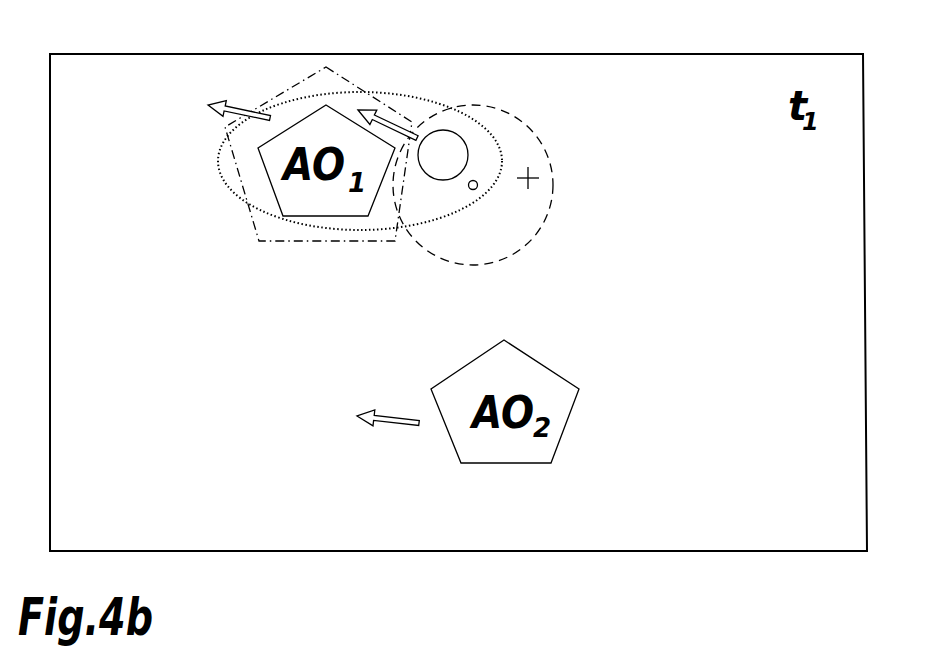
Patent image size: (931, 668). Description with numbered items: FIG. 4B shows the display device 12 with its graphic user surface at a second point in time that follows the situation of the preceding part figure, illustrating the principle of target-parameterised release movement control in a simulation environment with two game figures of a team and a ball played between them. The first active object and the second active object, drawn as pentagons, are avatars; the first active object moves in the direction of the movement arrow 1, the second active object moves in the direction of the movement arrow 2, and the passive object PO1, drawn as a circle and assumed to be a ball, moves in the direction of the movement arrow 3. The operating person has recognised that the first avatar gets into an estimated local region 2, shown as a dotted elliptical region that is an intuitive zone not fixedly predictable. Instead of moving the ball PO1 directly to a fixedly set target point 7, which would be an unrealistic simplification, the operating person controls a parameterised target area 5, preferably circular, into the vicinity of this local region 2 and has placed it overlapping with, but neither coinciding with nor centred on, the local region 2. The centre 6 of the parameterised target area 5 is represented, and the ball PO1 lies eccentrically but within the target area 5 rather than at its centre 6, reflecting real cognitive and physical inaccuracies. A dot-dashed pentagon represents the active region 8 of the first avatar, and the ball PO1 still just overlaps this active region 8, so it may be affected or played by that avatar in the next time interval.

The movement arrow 1 is at (232, 113).
The movement arrow / local region 2 is at (233, 190).
The movement arrow 3 is at (397, 130).
The parameterised target area 5 is at (542, 227).
The centre 6 is at (470, 189).
The target point 7 is at (540, 178).
The active region 8 is at (297, 242).
The display device 12 is at (840, 532).
The passive object PO1 is at (455, 155).